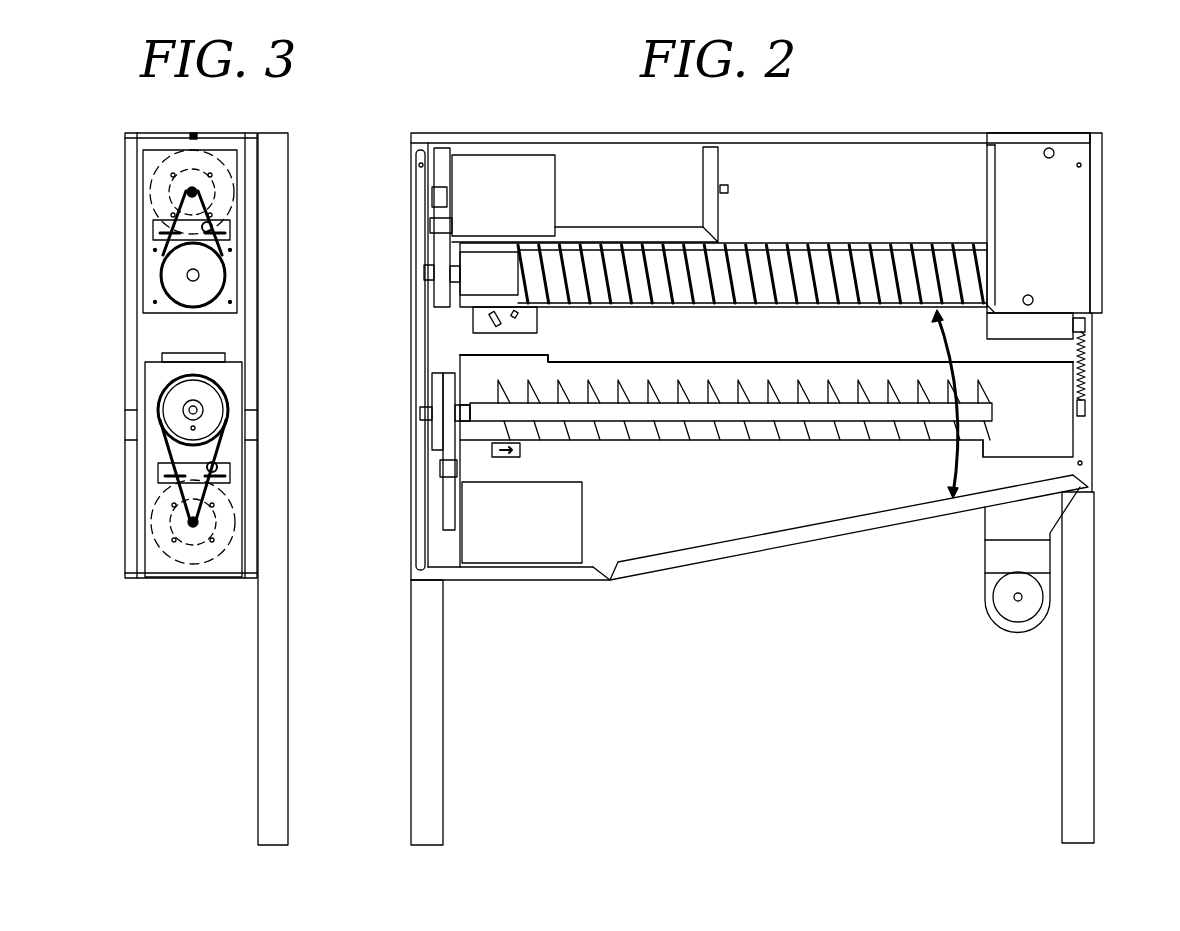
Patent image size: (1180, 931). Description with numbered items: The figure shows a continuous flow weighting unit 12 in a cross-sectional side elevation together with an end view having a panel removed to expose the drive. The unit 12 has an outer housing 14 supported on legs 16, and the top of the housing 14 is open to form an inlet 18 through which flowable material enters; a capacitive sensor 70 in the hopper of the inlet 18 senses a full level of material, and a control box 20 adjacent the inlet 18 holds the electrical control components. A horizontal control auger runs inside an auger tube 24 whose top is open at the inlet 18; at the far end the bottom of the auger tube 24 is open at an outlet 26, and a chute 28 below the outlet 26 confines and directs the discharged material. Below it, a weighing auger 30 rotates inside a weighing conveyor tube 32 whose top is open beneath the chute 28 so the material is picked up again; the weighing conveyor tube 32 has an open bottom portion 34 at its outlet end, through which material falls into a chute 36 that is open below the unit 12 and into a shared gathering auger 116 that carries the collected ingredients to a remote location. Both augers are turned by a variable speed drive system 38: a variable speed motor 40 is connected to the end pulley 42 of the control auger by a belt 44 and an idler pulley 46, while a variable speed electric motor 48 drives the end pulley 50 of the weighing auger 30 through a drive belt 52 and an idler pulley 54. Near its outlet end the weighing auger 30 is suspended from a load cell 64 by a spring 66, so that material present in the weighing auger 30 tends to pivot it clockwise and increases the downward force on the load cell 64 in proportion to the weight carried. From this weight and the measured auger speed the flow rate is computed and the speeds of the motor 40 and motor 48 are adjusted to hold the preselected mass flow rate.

In FIG. 2, the continuous flow weighting unit 12 is at (752, 452).
In FIG. 2, the outer housing 14 is at (688, 555).
In FIG. 2, the legs 16 is at (1078, 778).
In FIG. 2, the inlet 18 is at (855, 175).
In FIG. 2, the control box 20 is at (1025, 150).
In FIG. 2, the auger tube 24 is at (723, 299).
In FIG. 2, the outlet 26 is at (510, 312).
In FIG. 2, the chute 28 is at (535, 312).
In FIG. 2, the weighing auger 30 is at (815, 372).
In FIG. 2, the weighing conveyor tube 32 is at (845, 452).
In FIG. 2, the open bottom portion 34 is at (1020, 440).
In FIG. 2, the chute 36 is at (1010, 523).
In FIG. 3, the variable speed drive system 38 is at (275, 170).
In FIG. 3, the variable speed motor 40 is at (205, 165).
In FIG. 2, the variable speed motor 40 is at (495, 183).
In FIG. 3, the end pulley 42 is at (205, 283).
In FIG. 2, the end pulley 42 is at (428, 280).
In FIG. 3, the belt 44 is at (168, 247).
In FIG. 2, the belt 44 is at (432, 265).
In FIG. 3, the idler pulley 46 is at (215, 232).
In FIG. 2, the idler pulley 46 is at (440, 225).
In FIG. 3, the variable speed electric motor 48 is at (200, 560).
In FIG. 2, the variable speed electric motor 48 is at (555, 522).
In FIG. 3, the end pulley 50 is at (210, 410).
In FIG. 3, the drive belt 52 is at (165, 450).
In FIG. 2, the drive belt 52 is at (450, 510).
In FIG. 3, the idler pulley 54 is at (218, 472).
In FIG. 2, the idler pulley 54 is at (440, 468).
In FIG. 2, the load cell 64 is at (1088, 325).
In FIG. 2, the spring 66 is at (1090, 372).
In FIG. 2, the capacitive sensor 70 is at (732, 187).
In FIG. 2, the gathering auger 116 is at (1015, 603).